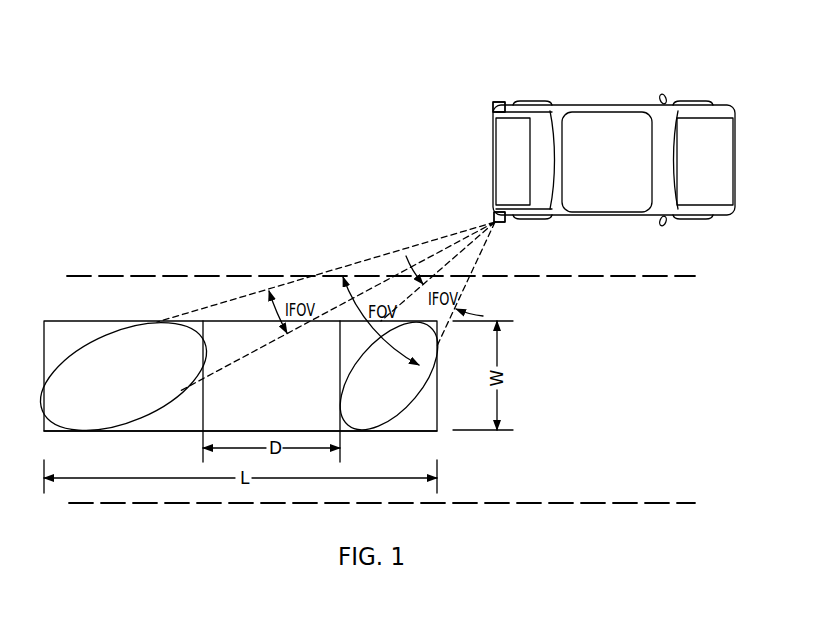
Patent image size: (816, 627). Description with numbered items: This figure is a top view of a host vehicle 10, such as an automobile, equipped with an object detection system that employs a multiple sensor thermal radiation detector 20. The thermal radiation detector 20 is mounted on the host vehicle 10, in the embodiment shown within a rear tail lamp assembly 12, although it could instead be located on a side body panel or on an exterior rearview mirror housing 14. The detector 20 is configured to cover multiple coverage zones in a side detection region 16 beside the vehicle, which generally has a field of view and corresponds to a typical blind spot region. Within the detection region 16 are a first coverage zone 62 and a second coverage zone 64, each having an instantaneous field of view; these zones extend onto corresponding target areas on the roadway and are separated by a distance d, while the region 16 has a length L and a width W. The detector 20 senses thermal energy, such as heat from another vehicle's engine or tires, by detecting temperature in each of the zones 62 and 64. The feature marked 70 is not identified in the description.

The host vehicle 10 is at (578, 92).
The rear tail lamp assembly 12 is at (493, 116).
The exterior rearview mirror housing 14 is at (664, 96).
The side detection region 16 is at (72, 321).
The thermal radiation detector 20 is at (497, 102).
The first coverage zone 62 is at (350, 360).
The second coverage zone 64 is at (70, 363).
The detection zone boundary 70 is at (418, 431).